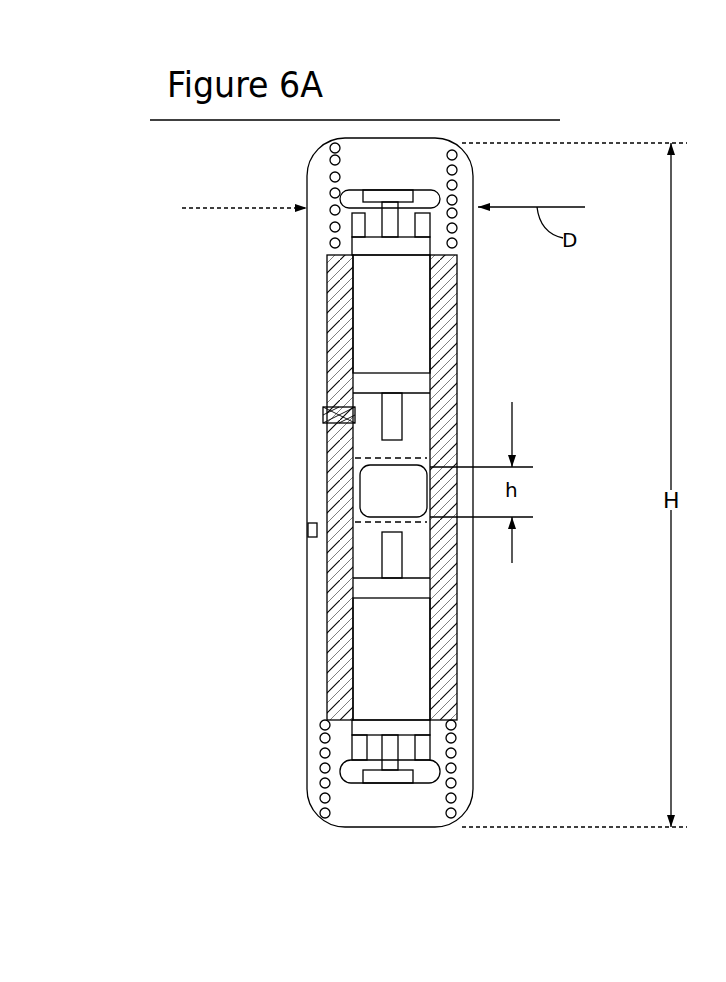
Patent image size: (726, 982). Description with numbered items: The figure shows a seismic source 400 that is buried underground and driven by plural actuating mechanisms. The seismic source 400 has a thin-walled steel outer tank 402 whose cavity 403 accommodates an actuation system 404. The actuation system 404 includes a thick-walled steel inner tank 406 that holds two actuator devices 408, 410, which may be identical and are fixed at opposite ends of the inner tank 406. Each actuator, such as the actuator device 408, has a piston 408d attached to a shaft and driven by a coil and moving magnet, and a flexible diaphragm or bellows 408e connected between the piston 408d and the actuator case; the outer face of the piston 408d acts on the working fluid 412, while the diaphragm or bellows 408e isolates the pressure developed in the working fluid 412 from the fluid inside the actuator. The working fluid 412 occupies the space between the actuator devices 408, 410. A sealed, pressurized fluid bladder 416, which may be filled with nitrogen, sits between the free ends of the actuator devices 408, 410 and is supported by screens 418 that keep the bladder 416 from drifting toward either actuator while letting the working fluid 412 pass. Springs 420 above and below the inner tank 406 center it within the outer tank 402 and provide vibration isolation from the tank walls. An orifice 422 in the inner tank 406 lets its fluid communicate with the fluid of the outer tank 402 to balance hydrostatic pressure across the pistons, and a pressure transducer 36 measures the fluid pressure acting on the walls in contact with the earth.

The seismic source 400 is at (437, 104).
The outer tank 402 is at (305, 359).
The cavity 403 is at (316, 274).
The springs 420 is at (322, 157).
The piston 408d is at (391, 189).
The diaphragm or bellows 408e is at (343, 191).
The inner tank 406 is at (330, 625).
The actuation system 404 is at (463, 383).
The actuator device 408 is at (417, 302).
The actuator device 410 is at (417, 648).
The working fluid 412 is at (365, 440).
The fluid bladder 416 is at (372, 488).
The screens 418 is at (372, 522).
The orifice 422 is at (322, 409).
The pressure transducer 36 is at (308, 530).